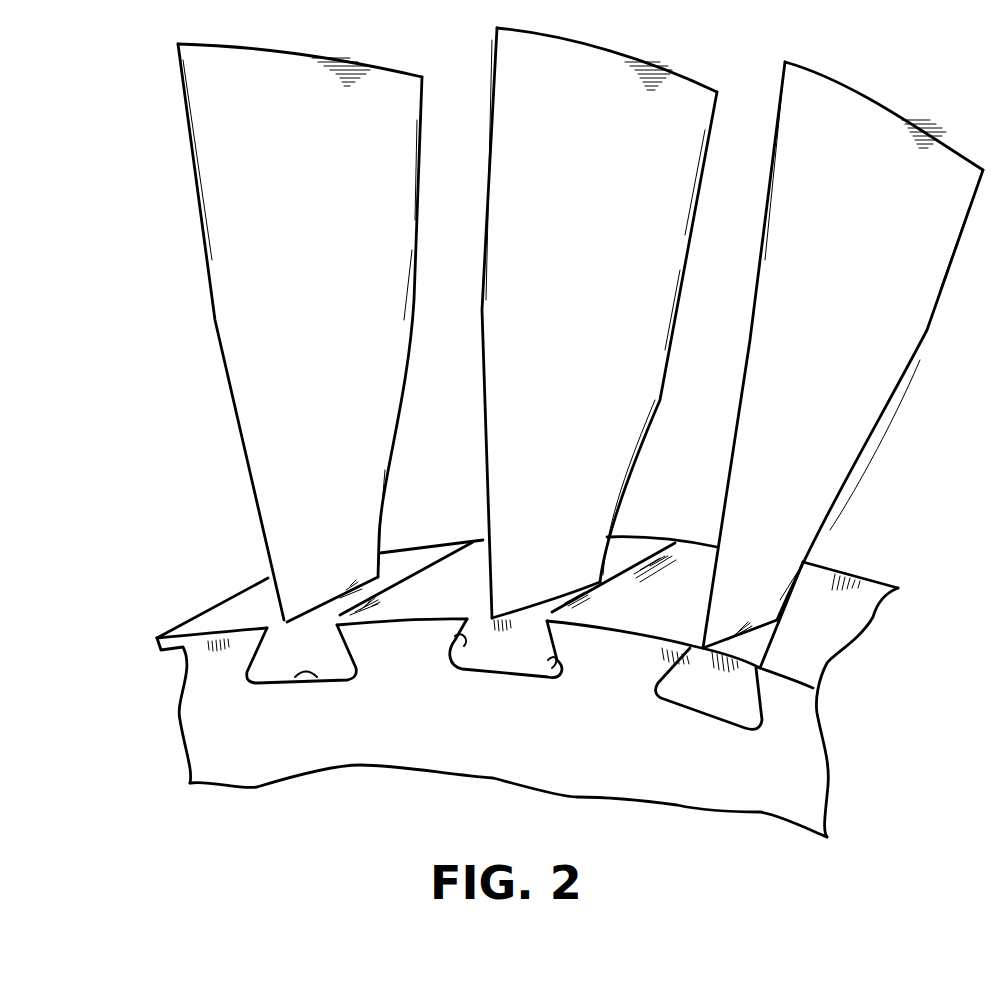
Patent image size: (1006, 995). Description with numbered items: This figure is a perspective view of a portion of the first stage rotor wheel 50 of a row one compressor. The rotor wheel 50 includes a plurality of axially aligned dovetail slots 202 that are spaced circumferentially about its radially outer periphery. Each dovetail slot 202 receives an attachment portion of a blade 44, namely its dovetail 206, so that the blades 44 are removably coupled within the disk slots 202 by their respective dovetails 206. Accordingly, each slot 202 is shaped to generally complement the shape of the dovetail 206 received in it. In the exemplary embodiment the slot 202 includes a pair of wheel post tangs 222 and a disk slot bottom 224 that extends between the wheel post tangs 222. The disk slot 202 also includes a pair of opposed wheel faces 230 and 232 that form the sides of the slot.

The blade 44 is at (326, 228).
The first stage rotor wheel 50 is at (478, 765).
The dovetail 206 is at (326, 661).
The dovetail slot 202 is at (320, 676).
The wheel post tangs 222 is at (467, 620).
The disk slot bottom 224 is at (503, 680).
The wheel face 230 is at (451, 652).
The wheel face 232 is at (560, 677).